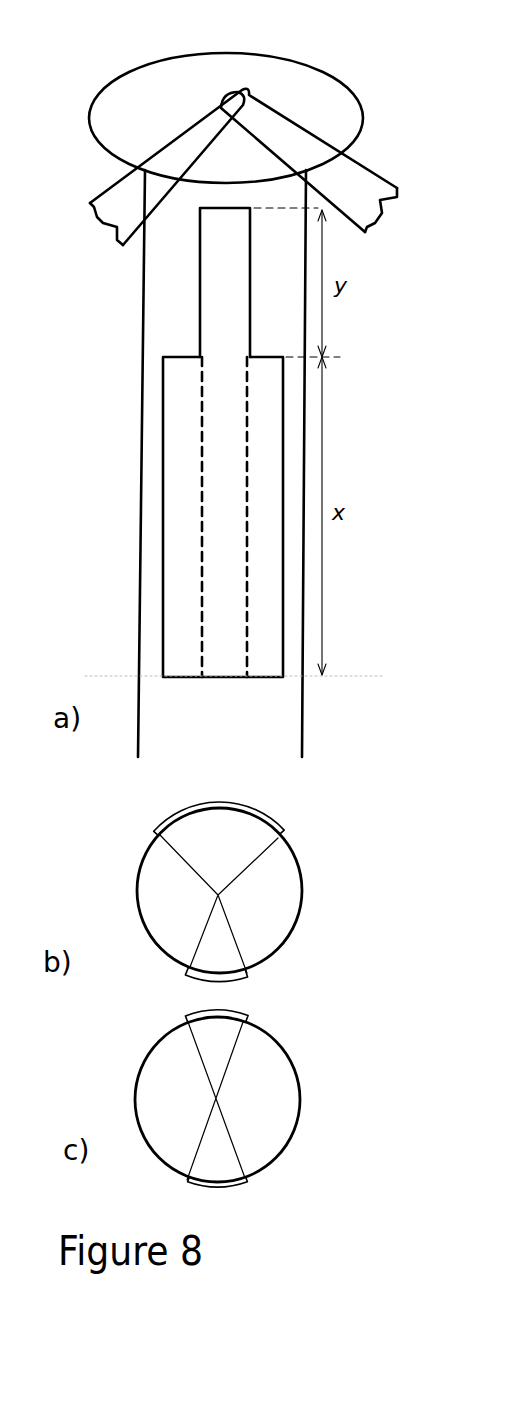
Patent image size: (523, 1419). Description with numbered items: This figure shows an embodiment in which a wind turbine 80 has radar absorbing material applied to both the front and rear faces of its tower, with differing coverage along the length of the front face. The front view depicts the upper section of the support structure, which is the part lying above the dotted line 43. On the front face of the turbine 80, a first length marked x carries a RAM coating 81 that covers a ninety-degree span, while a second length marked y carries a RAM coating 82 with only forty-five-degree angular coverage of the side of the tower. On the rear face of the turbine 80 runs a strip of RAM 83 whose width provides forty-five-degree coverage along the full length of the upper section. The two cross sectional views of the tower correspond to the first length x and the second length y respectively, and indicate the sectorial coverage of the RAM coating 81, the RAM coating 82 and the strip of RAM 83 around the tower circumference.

The wind turbine 80 is at (338, 60).
The RAM coating 81 is at (162, 430).
The RAM coating 82 is at (198, 284).
The strip of RAM 83 is at (199, 540).
The dotted line 43 is at (333, 673).